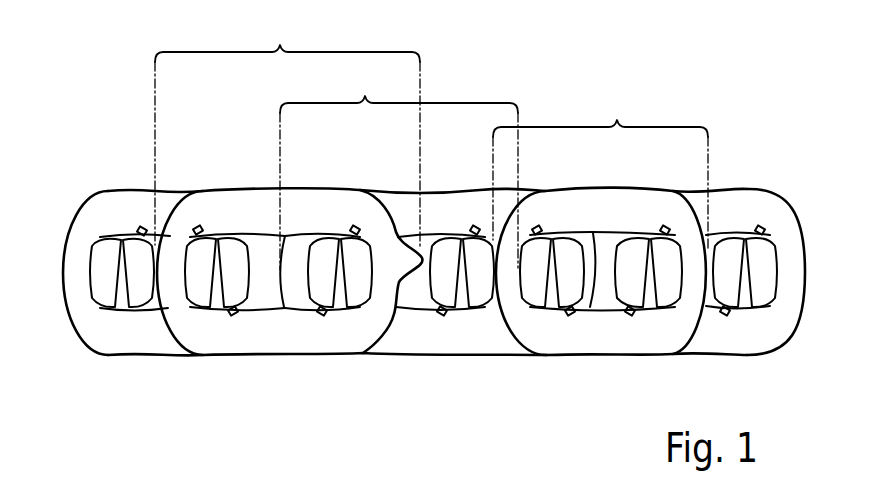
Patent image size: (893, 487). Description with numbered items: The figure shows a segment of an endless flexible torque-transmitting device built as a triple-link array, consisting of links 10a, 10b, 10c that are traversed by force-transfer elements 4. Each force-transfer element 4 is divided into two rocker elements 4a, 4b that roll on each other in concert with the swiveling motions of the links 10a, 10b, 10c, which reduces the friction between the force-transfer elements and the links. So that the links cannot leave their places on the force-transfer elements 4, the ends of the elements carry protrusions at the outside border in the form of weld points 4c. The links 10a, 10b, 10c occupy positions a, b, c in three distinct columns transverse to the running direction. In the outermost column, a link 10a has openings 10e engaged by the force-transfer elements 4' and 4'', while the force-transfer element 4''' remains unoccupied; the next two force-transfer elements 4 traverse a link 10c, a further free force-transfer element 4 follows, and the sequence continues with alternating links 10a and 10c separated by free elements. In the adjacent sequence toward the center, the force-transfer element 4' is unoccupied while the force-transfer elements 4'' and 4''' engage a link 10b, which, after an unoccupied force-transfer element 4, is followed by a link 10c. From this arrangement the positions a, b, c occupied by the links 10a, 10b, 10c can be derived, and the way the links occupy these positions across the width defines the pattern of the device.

The force-transfer element 4 is at (634, 285).
The force-transfer element 4' is at (222, 230).
The force-transfer element 4'' is at (355, 230).
The force-transfer element 4''' is at (462, 229).
The rocker element 4a is at (635, 250).
The rocker element 4b is at (668, 260).
The weld point 4c is at (631, 314).
The link 10a is at (280, 333).
The link 10b is at (440, 333).
The link 10c is at (568, 333).
The opening 10e is at (209, 318).
The position a is at (287, 133).
The position b is at (399, 168).
The position c is at (600, 170).